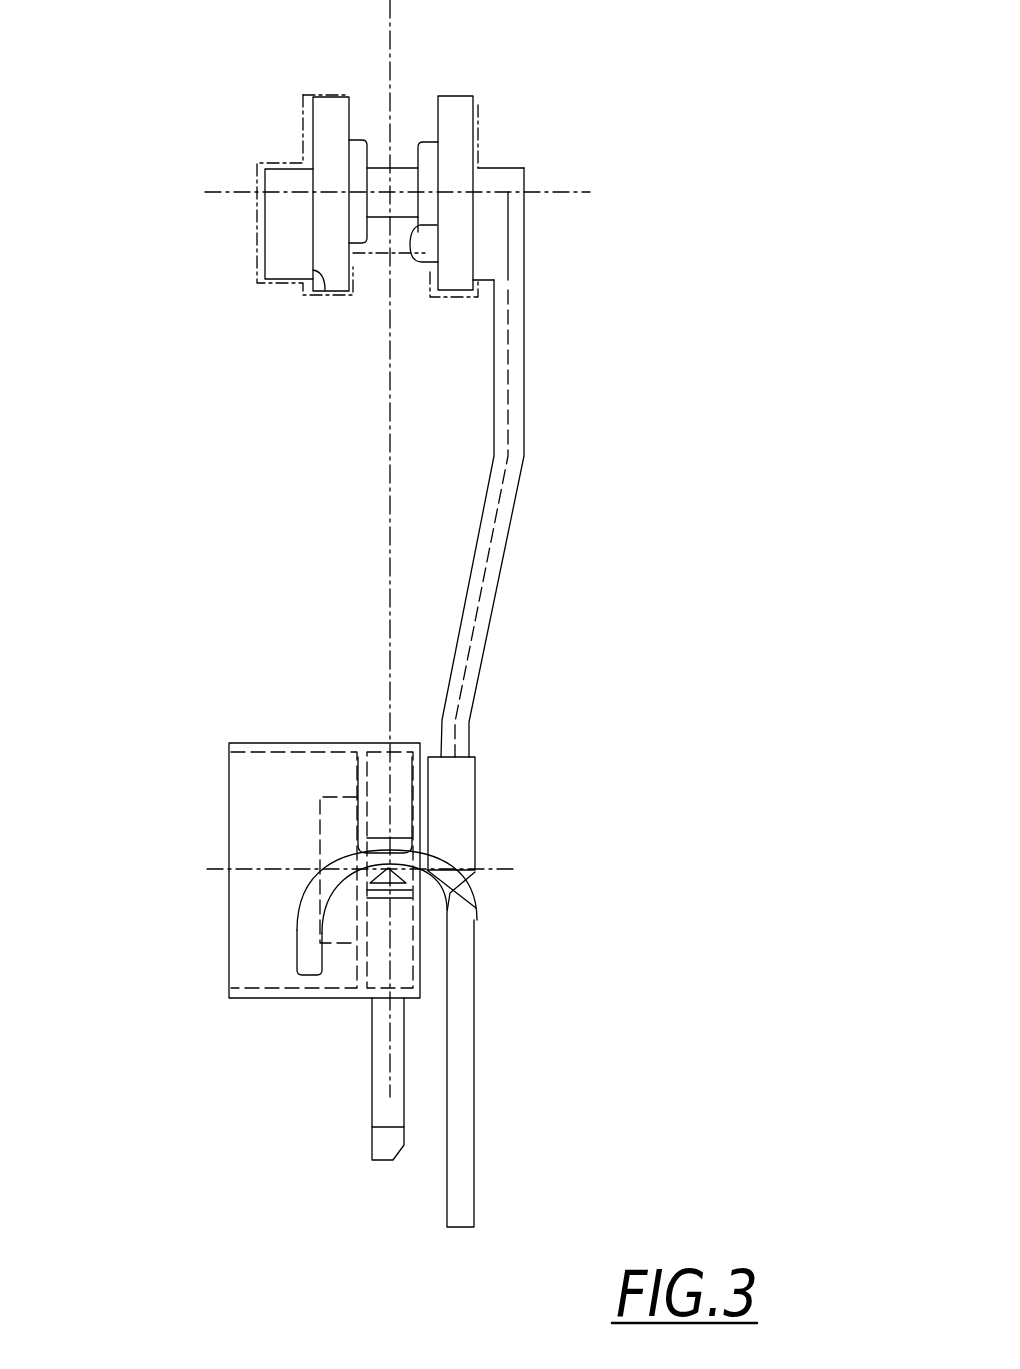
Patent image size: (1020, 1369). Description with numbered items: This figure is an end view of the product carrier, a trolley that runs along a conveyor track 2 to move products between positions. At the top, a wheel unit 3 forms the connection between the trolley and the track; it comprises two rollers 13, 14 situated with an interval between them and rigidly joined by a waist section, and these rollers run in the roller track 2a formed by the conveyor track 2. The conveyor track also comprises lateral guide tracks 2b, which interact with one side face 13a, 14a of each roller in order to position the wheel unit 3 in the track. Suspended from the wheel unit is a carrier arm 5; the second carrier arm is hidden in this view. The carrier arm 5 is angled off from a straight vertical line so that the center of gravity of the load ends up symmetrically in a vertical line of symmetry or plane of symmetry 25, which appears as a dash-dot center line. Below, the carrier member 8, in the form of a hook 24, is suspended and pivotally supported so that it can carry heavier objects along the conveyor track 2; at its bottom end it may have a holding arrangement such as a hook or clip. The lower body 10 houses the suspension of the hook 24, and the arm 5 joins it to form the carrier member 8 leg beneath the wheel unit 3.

The conveyor track 2 is at (324, 298).
The roller track 2a is at (313, 278).
The lateral guide tracks 2b is at (440, 288).
The wheel unit 3 is at (483, 100).
The carrier arm 5 is at (512, 428).
The carrier member 8 is at (465, 1107).
The housing 10 is at (275, 740).
The roller 13 is at (462, 136).
The side face of roller 13a is at (437, 225).
The roller 14 is at (326, 106).
The side face of roller 14a is at (360, 278).
The hook 24 is at (295, 935).
The plane of symmetry 25 is at (390, 450).